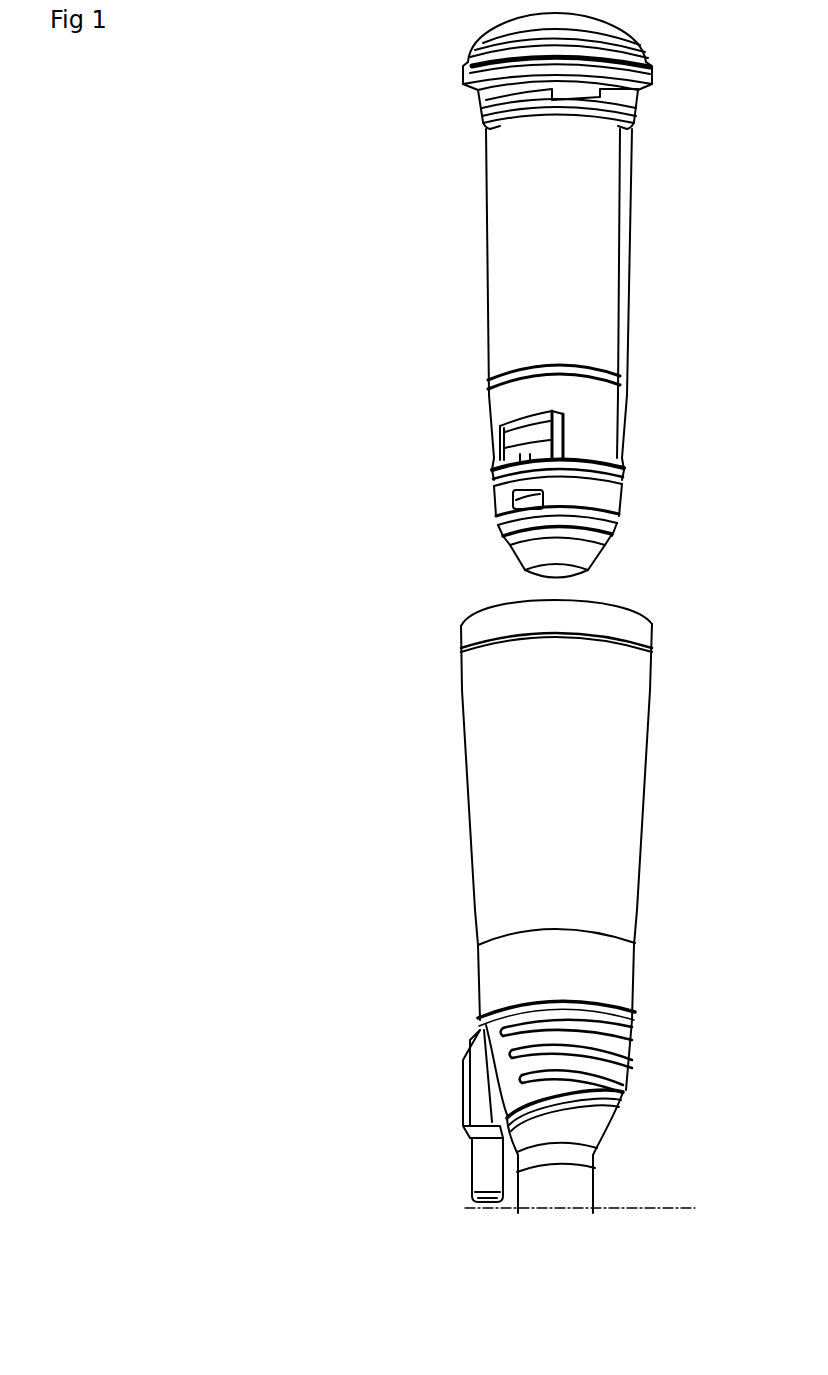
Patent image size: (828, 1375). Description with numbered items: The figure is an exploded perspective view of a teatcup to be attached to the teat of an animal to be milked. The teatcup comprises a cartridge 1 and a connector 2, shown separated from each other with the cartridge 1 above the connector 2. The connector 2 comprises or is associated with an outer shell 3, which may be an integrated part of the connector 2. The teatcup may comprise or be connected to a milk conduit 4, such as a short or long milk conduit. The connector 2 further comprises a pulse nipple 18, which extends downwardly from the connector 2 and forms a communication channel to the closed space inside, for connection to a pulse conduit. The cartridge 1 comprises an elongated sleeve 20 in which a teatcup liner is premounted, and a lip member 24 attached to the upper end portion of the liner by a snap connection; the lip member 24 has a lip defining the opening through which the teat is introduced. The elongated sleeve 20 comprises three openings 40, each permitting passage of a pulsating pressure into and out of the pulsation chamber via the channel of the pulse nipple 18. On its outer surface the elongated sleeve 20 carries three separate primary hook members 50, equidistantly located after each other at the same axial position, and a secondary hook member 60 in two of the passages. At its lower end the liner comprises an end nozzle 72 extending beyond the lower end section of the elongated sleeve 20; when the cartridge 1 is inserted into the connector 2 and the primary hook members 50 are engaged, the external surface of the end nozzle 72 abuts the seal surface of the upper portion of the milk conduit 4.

The cartridge 1 is at (448, 243).
The lip member 24 is at (505, 25).
The elongated sleeve 20 is at (510, 297).
The primary hook member 50 is at (517, 445).
The secondary hook member 60 is at (477, 473).
The opening 40 is at (515, 498).
The end nozzle 72 is at (540, 554).
The connector 2 is at (503, 1018).
The outer shell 3 is at (495, 718).
The pulse nipple 18 is at (485, 1156).
The milk conduit 4 is at (555, 1200).